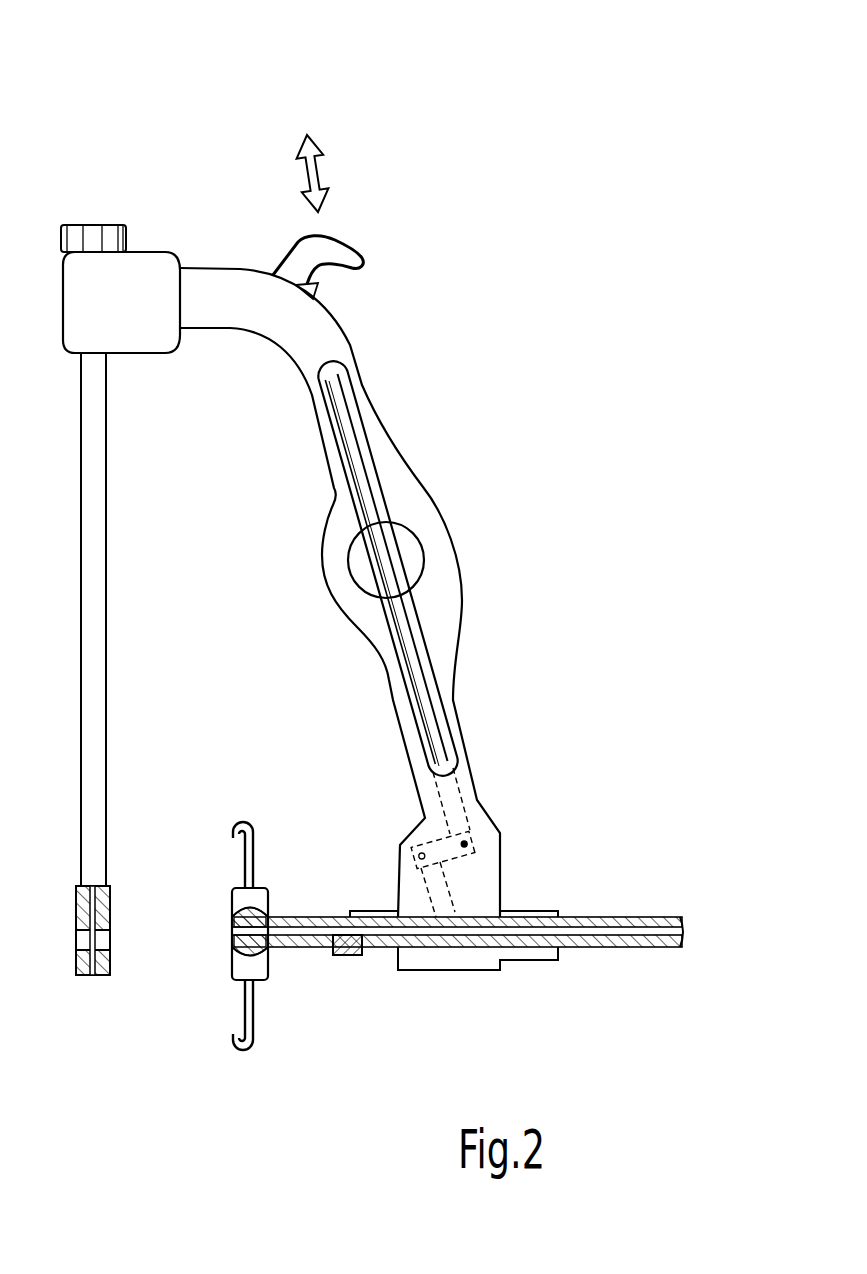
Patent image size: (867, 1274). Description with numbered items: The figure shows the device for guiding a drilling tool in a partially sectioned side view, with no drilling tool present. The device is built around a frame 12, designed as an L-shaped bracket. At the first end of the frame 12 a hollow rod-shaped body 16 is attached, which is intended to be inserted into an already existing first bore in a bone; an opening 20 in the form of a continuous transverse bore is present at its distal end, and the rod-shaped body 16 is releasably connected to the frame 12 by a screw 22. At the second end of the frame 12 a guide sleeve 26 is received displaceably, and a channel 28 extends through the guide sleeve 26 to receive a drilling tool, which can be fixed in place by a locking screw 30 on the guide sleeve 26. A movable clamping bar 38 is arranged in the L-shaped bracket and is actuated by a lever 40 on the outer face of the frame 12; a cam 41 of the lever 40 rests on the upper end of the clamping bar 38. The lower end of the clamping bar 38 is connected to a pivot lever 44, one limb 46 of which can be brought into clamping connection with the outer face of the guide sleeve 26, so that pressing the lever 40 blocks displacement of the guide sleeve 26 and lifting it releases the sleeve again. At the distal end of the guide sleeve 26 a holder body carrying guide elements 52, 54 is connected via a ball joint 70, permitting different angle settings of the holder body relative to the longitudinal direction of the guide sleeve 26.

The frame 12 is at (400, 475).
The rod-shaped body 16 is at (89, 580).
The opening 20 is at (95, 936).
The screw 22 is at (100, 226).
The guide sleeve 26 is at (608, 942).
The channel 28 is at (672, 930).
The locking screw 30 is at (347, 957).
The clamping bar 38 is at (382, 570).
The lever 40 is at (345, 243).
The cam 41 is at (320, 286).
The pivot lever 44 is at (470, 847).
The limb 46 is at (433, 905).
The guide element 52 is at (250, 1050).
The guide element 54 is at (246, 822).
The ball joint 70 is at (230, 953).